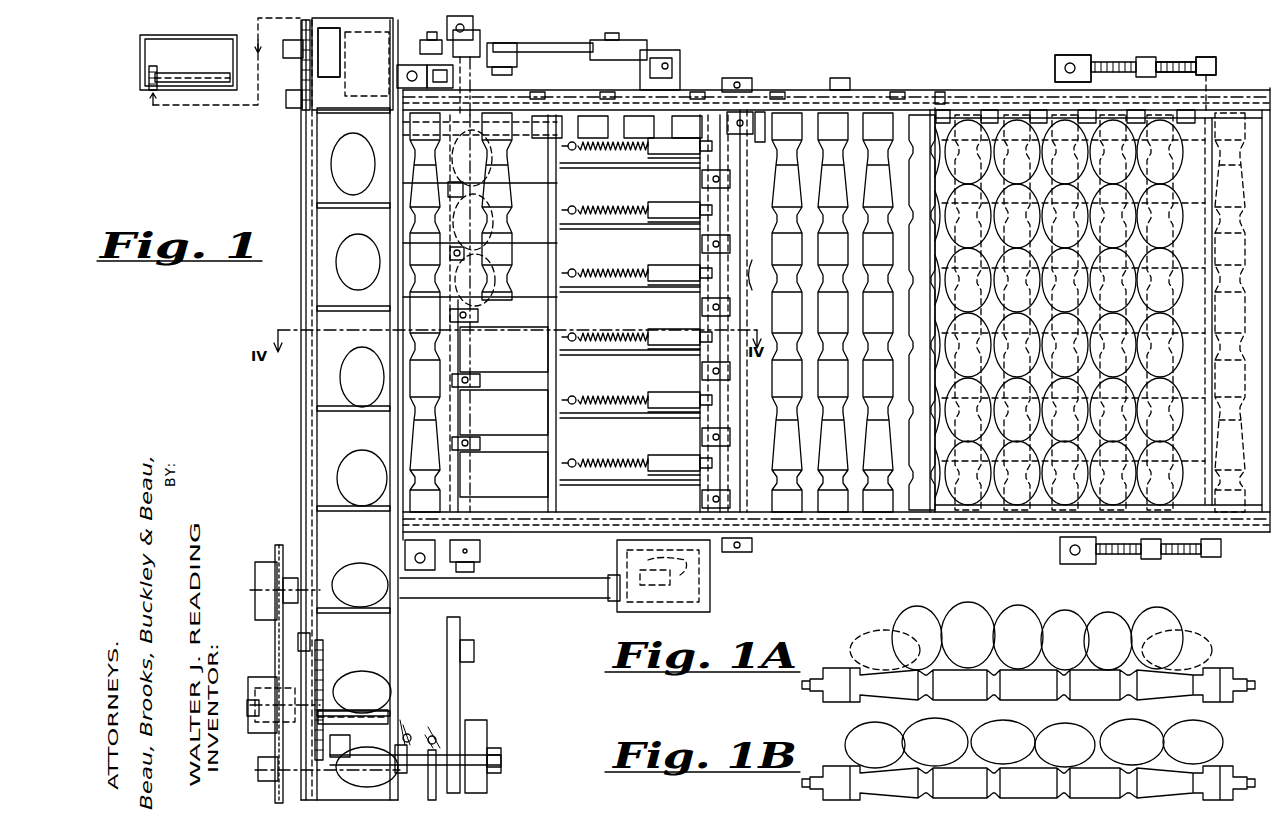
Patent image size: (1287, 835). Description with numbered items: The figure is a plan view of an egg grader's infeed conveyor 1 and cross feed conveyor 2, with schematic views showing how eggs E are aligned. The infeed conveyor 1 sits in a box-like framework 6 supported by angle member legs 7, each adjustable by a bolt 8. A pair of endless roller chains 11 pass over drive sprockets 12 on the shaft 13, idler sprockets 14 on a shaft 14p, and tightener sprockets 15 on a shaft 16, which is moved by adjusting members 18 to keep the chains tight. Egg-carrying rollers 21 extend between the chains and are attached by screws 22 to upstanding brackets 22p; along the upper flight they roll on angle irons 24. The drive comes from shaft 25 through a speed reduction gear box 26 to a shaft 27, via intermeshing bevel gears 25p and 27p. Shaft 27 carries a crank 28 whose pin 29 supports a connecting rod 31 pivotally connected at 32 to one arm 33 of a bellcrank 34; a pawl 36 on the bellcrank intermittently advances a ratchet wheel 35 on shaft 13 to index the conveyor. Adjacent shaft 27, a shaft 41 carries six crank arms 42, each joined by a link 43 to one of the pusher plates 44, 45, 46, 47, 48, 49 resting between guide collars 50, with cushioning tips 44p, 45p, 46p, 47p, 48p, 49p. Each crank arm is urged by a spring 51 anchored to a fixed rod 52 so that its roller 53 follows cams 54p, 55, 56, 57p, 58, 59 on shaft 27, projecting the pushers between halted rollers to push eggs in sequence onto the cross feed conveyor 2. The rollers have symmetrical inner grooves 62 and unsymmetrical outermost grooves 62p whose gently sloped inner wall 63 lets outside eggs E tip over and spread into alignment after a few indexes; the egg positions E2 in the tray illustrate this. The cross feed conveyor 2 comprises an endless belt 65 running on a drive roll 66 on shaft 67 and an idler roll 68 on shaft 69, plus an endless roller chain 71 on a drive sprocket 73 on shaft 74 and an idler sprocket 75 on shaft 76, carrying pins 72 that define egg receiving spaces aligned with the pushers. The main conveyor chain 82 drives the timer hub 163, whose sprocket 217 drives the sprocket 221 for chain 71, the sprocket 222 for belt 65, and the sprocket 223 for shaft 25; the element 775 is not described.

In FIG. 1, the infeed conveyor 1 is at (980, 80).
In FIG. 1, the cross feed conveyor 2 is at (283, 181).
In FIG. 1, the framework 6 is at (823, 82).
In FIG. 1, the angle member legs 7 is at (412, 65).
In FIG. 1, the bolt 8 is at (1068, 62).
In FIG. 1, the endless roller chains 11 is at (900, 90).
In FIG. 1, the drive sprockets 12 is at (486, 532).
In FIG. 1, the drive shaft 13 is at (475, 340).
In FIG. 1, the idler sprockets 14 is at (752, 80).
In FIG. 1, the shaft 14p is at (763, 275).
In FIG. 1, the tightener sprockets 15 is at (1216, 75).
In FIG. 1, the shaft 16 is at (1228, 163).
In FIG. 1, the members 18 is at (1170, 60).
In FIG. 1, the egg-carrying rollers 21 is at (838, 170).
In FIG. 1A, the egg-carrying rollers 21 is at (1215, 668).
In FIG. 1B, the egg-carrying rollers 21 is at (1228, 765).
In FIG. 1, the screws 22 is at (940, 92).
In FIG. 1A, the screws 22 is at (1258, 680).
In FIG. 1, the upstanding brackets 22p is at (580, 92).
In FIG. 1, the angle irons 24 is at (758, 128).
In FIG. 1, the shaft 25 is at (532, 598).
In FIG. 1, the bevel gear 25p is at (648, 602).
In FIG. 1, the speed reduction gear box 26 is at (712, 603).
In FIG. 1, the shaft 27 is at (650, 315).
In FIG. 1, the bevel gear 27p is at (690, 565).
In FIG. 1, the crank 28 is at (660, 50).
In FIG. 1, the pin 29 is at (618, 33).
In FIG. 1, the connecting rod 31 is at (555, 42).
In FIG. 1, the pivot 32 is at (432, 32).
In FIG. 1, the arm 33 is at (440, 76).
In FIG. 1, the bellcrank 34 is at (495, 68).
In FIG. 1, the ratchet wheel 35 is at (472, 28).
In FIG. 1, the pawl 36 is at (482, 38).
In FIG. 1, the shaft 41 is at (702, 308).
In FIG. 1, the crank arms 42 is at (702, 184).
In FIG. 1, the link 43 is at (595, 228).
In FIG. 1, the pusher plate 44 is at (504, 474).
In FIG. 1, the tip 44p is at (470, 487).
In FIG. 1, the pusher plate 45 is at (504, 412).
In FIG. 1, the tip 45p is at (472, 420).
In FIG. 1, the pusher plate 46 is at (504, 349).
In FIG. 1, the tip 46p is at (475, 362).
In FIG. 1, the pusher plate 47 is at (480, 282).
In FIG. 1, the tip 47p is at (460, 298).
In FIG. 1, the pusher plate 48 is at (480, 227).
In FIG. 1, the tip 48p is at (450, 235).
In FIG. 1, the pusher plate 49 is at (480, 152).
In FIG. 1, the tip 49p is at (445, 168).
In FIG. 1, the guide collars 50 is at (480, 316).
In FIG. 1, the spring 51 is at (600, 205).
In FIG. 1, the fixed rod 52 is at (558, 318).
In FIG. 1, the roller 53 is at (703, 313).
In FIG. 1, the cam 54p is at (648, 486).
In FIG. 1, the cam 55 is at (645, 420).
In FIG. 1, the cam 56 is at (645, 356).
In FIG. 1, the cam 57p is at (650, 287).
In FIG. 1, the cam 58 is at (645, 230).
In FIG. 1, the cam 59 is at (645, 170).
In FIG. 1, the inner grooves 62 is at (778, 220).
In FIG. 1A, the inner grooves 62 is at (930, 703).
In FIG. 1A, the outermost grooves 62p is at (865, 703).
In FIG. 1, the inner wall 63 is at (778, 422).
In FIG. 1A, the inner wall 63 is at (915, 703).
In FIG. 1, the endless belt 65 is at (345, 428).
In FIG. 1, the drive roll 66 is at (365, 690).
In FIG. 1, the shaft 67 is at (350, 685).
In FIG. 1, the idler roll 68 is at (362, 78).
In FIG. 1, the shaft 69 is at (350, 58).
In FIG. 1, the endless roller chain 71 is at (312, 452).
In FIG. 1, the pins 72 is at (195, 73).
In FIG. 1, the drive sprocket 73 is at (318, 632).
In FIG. 1, the shaft 74 is at (312, 695).
In FIG. 1, the idler sprocket 75 is at (153, 68).
In FIG. 1, the shaft 76 is at (283, 45).
In FIG. 1, the main conveyor chain 82 is at (428, 800).
In FIG. 1, the timer hub 163 is at (488, 735).
In FIG. 1, the sprocket 217 is at (276, 796).
In FIG. 1, the sprocket 221 is at (276, 662).
In FIG. 1, the sprocket 222 is at (272, 728).
In FIG. 1, the sprocket 223 is at (272, 550).
In FIG. 1, the lower guide 775 is at (353, 733).
In FIG. 1, the eggs E is at (345, 136).
In FIG. 1A, the eggs E is at (905, 620).
In FIG. 1B, the eggs E is at (1050, 728).
In FIG. 1, the eggs in tray E2 is at (1070, 312).